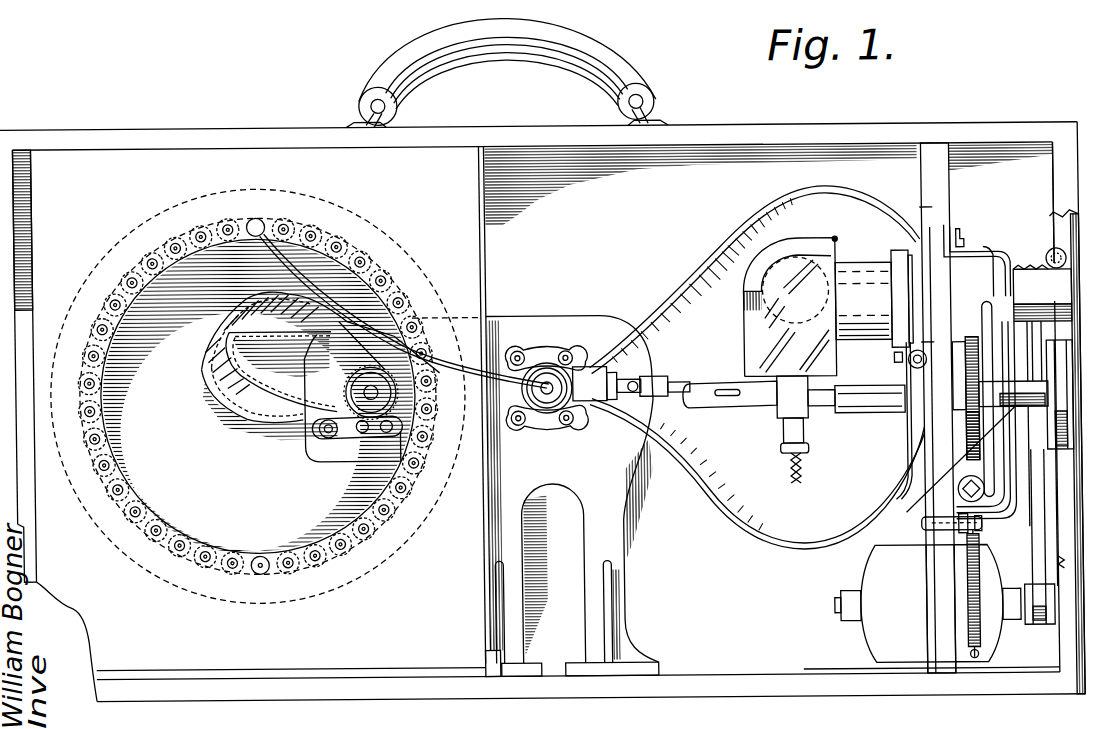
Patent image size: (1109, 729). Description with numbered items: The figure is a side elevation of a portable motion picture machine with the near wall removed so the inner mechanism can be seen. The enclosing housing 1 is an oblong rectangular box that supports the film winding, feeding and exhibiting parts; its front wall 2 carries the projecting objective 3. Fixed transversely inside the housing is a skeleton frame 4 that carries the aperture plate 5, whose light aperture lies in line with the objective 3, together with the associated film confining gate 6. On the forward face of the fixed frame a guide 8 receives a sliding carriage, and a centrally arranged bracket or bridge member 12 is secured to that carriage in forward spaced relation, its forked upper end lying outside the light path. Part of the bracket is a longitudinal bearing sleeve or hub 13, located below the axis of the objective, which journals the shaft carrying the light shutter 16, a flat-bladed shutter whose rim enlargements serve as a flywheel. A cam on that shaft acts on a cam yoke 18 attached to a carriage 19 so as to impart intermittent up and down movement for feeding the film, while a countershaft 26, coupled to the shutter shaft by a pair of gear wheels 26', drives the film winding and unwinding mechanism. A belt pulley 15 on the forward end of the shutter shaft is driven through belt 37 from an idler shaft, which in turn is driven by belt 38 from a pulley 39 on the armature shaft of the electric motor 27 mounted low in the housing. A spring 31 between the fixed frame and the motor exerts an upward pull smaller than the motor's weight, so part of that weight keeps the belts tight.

The enclosing housing 1 is at (756, 126).
The front wall 2 is at (1062, 190).
The projecting objective 3 is at (1042, 293).
The skeleton frame 4 is at (930, 176).
The aperture plate 5 is at (945, 219).
The film confining gate 6 is at (915, 297).
The guide 8 is at (968, 234).
The bracket or bridge member 12 is at (993, 254).
The bearing sleeve or hub 13 is at (925, 528).
The belt pulley 15 is at (1060, 456).
The light shutter 16 is at (973, 389).
The cam yoke 18 is at (965, 345).
The carriage 19 is at (958, 372).
The countershaft 26 is at (841, 429).
The gear wheels 26' is at (956, 436).
The motor 27 is at (928, 603).
The spring 31 is at (966, 586).
The belt 37 is at (1040, 425).
The belt 38 is at (1034, 538).
The pulley 39 is at (1038, 550).